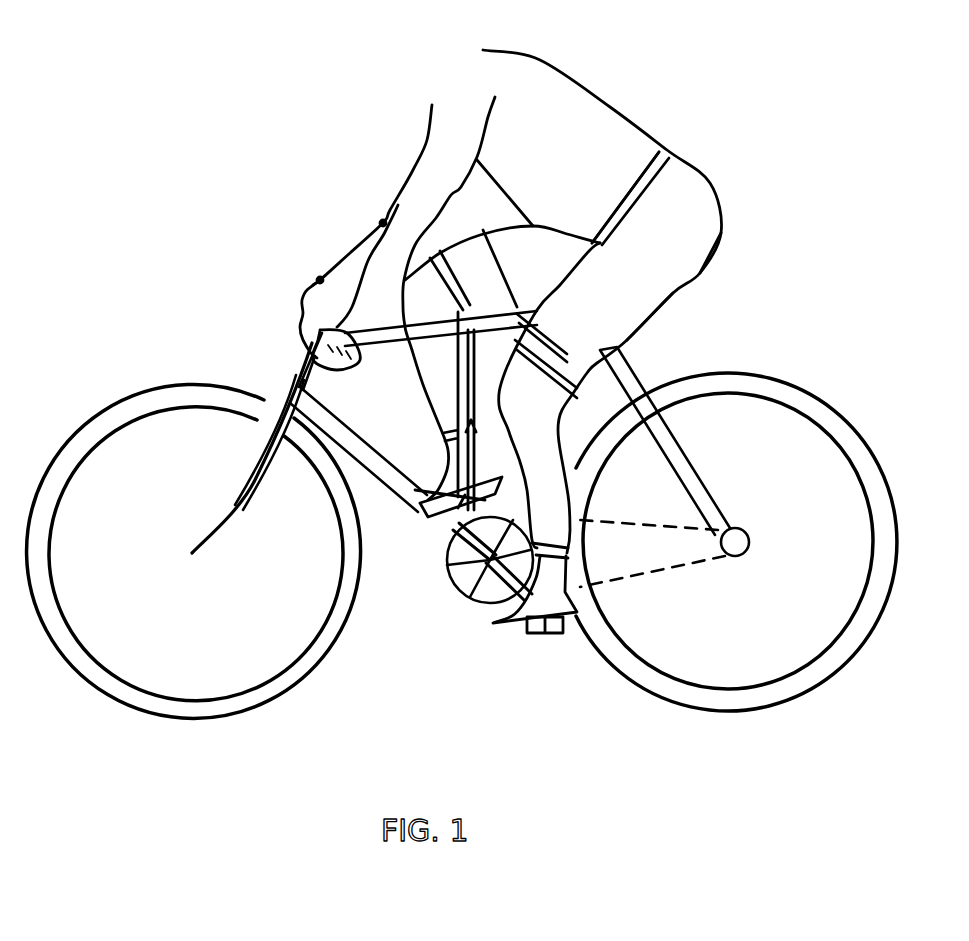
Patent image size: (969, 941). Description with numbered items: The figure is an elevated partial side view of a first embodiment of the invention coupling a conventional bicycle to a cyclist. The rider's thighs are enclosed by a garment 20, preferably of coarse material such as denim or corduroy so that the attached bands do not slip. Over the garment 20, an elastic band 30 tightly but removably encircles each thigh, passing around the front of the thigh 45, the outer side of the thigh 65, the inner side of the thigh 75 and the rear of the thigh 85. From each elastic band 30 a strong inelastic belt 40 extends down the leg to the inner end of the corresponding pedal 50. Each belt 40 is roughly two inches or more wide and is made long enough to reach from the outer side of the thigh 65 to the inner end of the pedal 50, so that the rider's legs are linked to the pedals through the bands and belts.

The garment 20 is at (677, 223).
The elastic band 30 is at (480, 250).
The strong inelastic belt 40 is at (457, 380).
The front of thigh 45 is at (565, 288).
The pedal 50 is at (448, 510).
The outer side of thigh 65 is at (618, 287).
The inner side of thigh 75 is at (533, 260).
The rear of thigh 85 is at (675, 293).